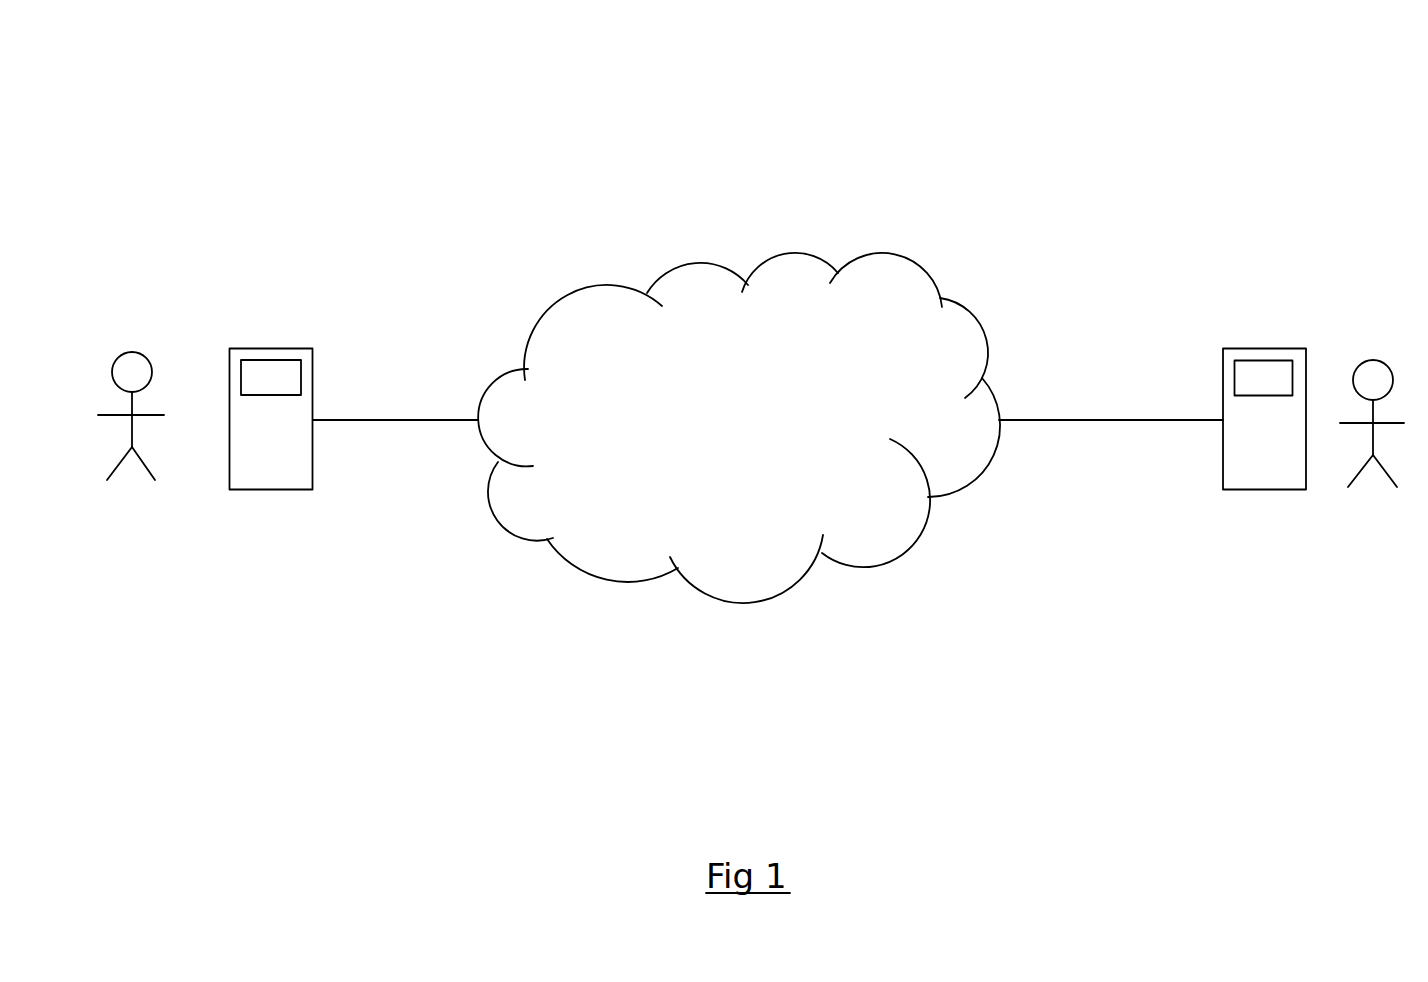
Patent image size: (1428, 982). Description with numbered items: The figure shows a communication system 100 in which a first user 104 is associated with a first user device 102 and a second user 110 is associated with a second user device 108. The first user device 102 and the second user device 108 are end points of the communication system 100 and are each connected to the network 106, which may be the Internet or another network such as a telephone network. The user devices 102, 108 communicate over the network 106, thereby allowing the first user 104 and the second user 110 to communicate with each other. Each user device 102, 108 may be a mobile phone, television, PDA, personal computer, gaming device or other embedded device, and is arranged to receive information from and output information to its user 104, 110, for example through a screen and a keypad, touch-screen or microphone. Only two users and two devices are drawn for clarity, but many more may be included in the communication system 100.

The communication system 100 is at (437, 135).
The first user device 102 is at (237, 348).
The first user 104 is at (132, 351).
The network 106 is at (892, 265).
The second user device 108 is at (1274, 348).
The second user 110 is at (1373, 358).